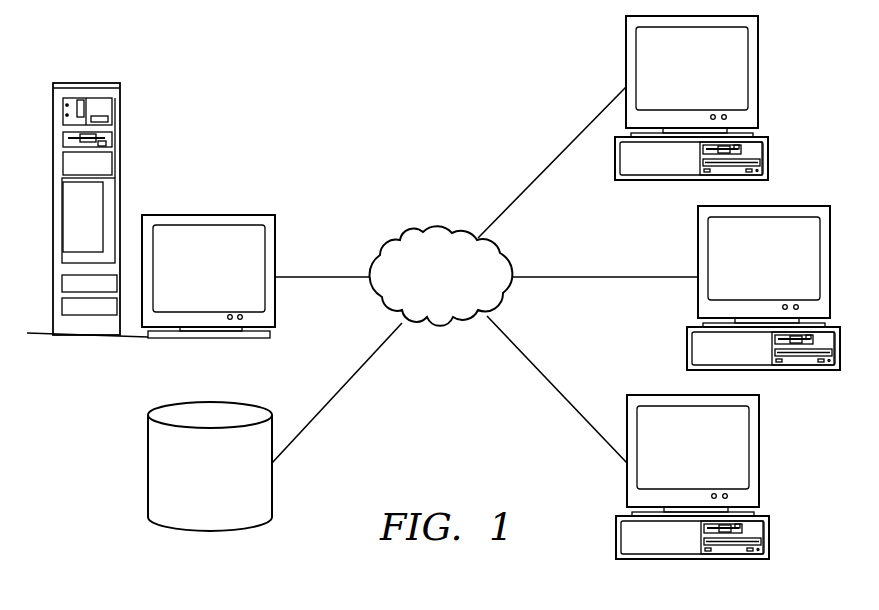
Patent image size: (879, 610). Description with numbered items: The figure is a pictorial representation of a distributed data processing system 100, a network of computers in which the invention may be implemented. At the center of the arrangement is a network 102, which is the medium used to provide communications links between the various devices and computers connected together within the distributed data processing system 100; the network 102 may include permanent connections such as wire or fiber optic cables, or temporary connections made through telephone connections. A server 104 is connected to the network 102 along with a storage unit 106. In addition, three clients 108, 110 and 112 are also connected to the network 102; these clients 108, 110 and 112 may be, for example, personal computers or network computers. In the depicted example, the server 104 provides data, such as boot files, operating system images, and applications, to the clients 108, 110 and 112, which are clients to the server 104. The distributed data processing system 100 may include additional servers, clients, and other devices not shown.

The distributed data processing system 100 is at (227, 77).
The network 102 is at (460, 289).
The server 104 is at (228, 277).
The storage unit 106 is at (230, 488).
The client 108 is at (713, 82).
The client 110 is at (784, 271).
The client 112 is at (712, 462).